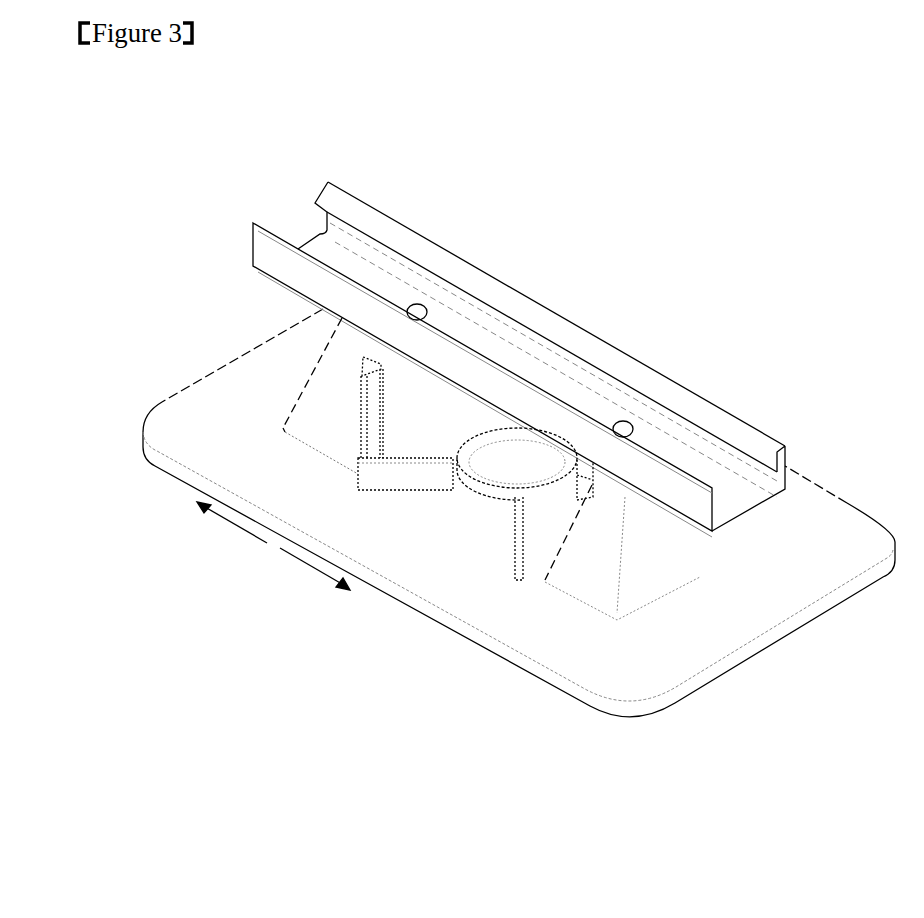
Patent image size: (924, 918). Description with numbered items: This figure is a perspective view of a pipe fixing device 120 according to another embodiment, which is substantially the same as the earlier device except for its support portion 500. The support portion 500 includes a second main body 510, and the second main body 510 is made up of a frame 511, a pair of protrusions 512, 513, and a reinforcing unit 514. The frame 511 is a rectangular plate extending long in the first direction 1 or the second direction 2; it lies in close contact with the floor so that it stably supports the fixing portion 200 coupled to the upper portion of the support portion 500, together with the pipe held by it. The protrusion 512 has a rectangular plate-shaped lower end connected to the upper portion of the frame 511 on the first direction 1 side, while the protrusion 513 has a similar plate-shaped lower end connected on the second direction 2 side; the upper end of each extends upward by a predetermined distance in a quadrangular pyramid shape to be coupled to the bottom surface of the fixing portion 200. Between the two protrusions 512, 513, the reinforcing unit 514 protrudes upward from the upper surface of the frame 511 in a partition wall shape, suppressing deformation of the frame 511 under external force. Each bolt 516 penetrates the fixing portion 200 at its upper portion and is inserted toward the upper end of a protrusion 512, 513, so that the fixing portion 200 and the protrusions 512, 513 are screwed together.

The pipe fixing device 120 is at (200, 179).
The fixing portion 200 is at (455, 262).
The support portion 500 is at (492, 555).
The second main body 510 is at (491, 550).
The frame 511 is at (425, 590).
The protrusion 512 is at (350, 428).
The protrusion 513 is at (612, 550).
The reinforcing unit 514 is at (498, 513).
The bolt 516 is at (622, 427).
The first direction 1 is at (232, 524).
The second direction 2 is at (315, 569).